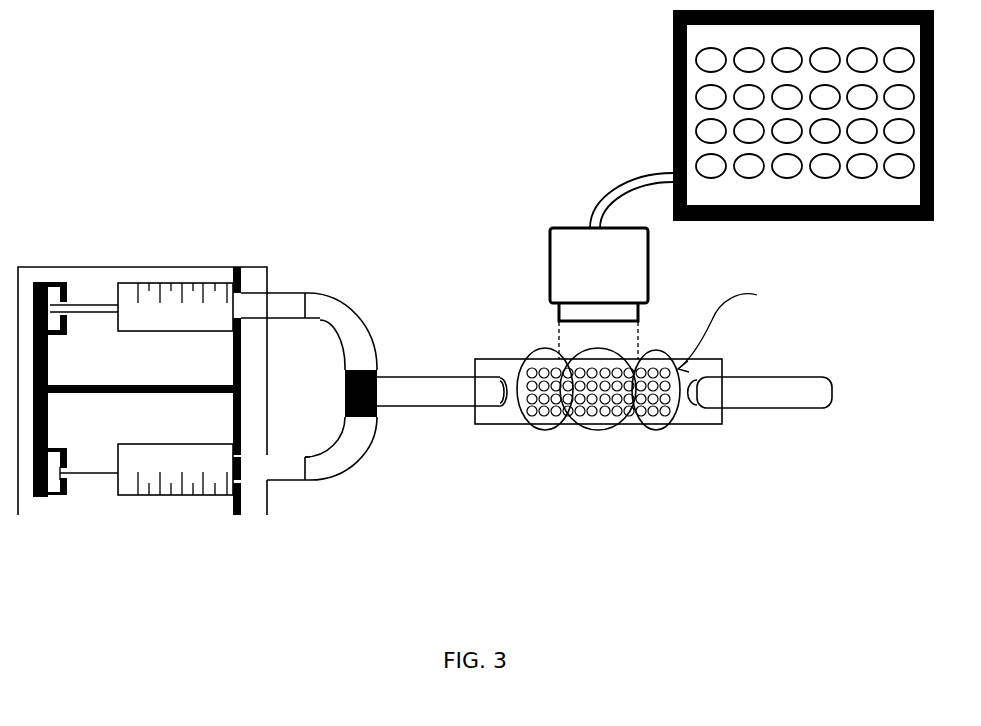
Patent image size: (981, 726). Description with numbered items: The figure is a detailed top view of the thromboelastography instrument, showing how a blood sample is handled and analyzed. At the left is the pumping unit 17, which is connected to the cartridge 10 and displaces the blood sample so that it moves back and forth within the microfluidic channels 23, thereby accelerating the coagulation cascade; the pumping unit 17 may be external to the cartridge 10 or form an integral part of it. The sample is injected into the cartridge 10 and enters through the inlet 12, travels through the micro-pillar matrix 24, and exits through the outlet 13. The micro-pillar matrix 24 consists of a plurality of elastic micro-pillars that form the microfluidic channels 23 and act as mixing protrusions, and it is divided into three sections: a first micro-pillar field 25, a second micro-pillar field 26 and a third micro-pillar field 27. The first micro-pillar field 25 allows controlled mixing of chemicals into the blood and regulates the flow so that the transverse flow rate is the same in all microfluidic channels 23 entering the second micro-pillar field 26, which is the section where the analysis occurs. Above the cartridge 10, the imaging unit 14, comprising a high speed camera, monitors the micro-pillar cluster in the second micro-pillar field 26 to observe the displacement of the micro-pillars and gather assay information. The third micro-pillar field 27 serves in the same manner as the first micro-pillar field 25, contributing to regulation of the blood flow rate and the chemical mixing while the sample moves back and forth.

The cartridge 10 is at (492, 415).
The inlet 12 is at (485, 392).
The outlet 13 is at (708, 392).
The imaging unit 14 is at (573, 260).
The pumping unit 17 is at (143, 233).
The microfluidic channel 23 is at (585, 403).
The micro-pillar matrix 24 is at (728, 331).
The first micro-pillar field 25 is at (540, 428).
The second micro-pillar field 26 is at (603, 431).
The third micro-pillar field 27 is at (653, 430).